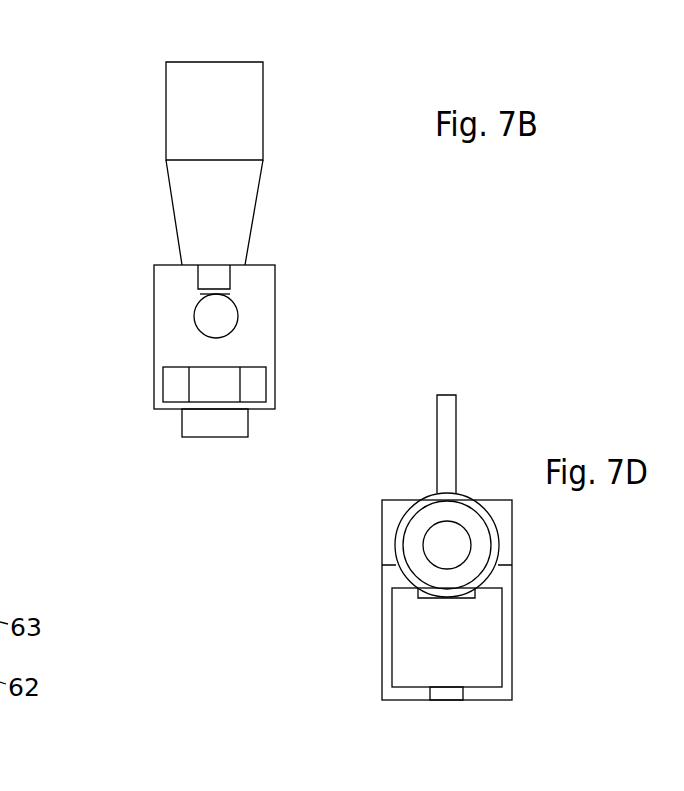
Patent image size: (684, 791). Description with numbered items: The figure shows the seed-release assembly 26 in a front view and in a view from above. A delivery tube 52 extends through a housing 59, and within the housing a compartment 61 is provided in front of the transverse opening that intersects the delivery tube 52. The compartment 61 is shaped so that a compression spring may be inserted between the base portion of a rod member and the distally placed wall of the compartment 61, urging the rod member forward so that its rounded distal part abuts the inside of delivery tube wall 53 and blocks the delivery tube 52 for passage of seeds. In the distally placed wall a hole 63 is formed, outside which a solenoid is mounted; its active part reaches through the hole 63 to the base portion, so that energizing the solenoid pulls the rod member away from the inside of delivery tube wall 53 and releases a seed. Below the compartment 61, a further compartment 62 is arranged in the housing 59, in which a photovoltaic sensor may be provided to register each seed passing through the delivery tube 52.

In FIG. 7B, the assembly 26 is at (323, 92).
In FIG. 7D, the assembly 26 is at (567, 598).
In FIG. 7B, the delivery tube 52 is at (166, 108).
In FIG. 7D, the delivery tube 52 is at (395, 545).
In FIG. 7D, the inside of delivery tube wall 53 is at (443, 520).
In FIG. 7B, the housing 59 is at (275, 323).
In FIG. 7D, the compartment 61 is at (418, 635).
In FIG. 7B, the compartment 62 is at (168, 386).
In FIG. 7B, the hole 63 is at (202, 313).
In FIG. 7D, the hole 63 is at (447, 700).